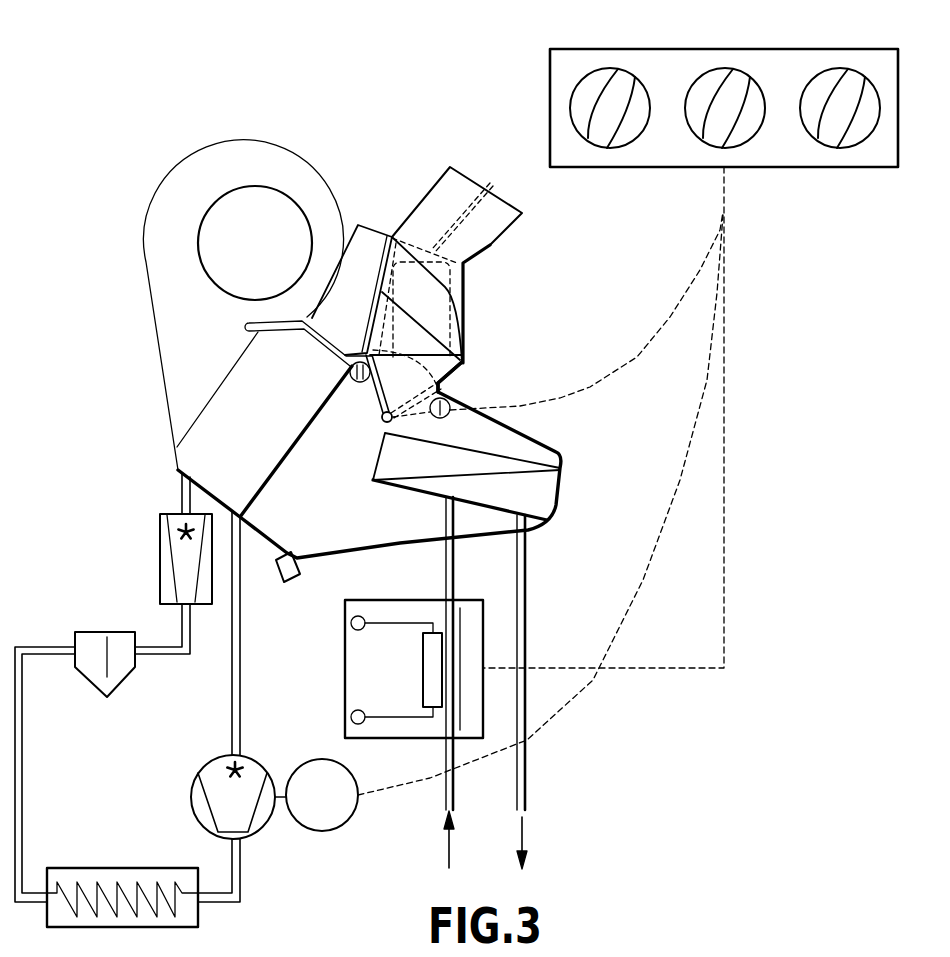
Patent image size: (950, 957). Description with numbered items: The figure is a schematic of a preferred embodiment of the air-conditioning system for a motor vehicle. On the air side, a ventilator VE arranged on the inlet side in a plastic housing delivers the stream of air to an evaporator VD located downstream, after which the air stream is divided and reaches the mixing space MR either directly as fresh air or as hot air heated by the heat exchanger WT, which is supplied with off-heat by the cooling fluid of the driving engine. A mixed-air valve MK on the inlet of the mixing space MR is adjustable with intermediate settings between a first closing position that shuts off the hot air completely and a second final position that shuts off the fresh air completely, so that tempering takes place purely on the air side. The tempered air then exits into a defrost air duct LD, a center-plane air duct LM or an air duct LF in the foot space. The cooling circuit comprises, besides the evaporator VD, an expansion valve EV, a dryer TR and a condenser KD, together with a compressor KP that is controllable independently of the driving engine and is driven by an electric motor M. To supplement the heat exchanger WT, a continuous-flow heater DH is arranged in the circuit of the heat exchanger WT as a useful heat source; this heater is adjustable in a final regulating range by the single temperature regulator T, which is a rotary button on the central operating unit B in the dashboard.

The central operating unit B is at (830, 48).
The temperature regulator T is at (735, 78).
The ventilator VE is at (154, 266).
The evaporator VD is at (203, 420).
The defrost air duct LD is at (367, 228).
The center-plane air duct LM is at (455, 173).
The foot space air duct LF is at (443, 326).
The mixing space MR is at (442, 381).
The mixed-air valve MK is at (373, 392).
The heat exchanger WT is at (544, 502).
The continuous-flow heater DH is at (352, 682).
The expansion valve EV is at (165, 553).
The dryer TR is at (125, 630).
The compressor KP is at (197, 783).
The electric motor M is at (335, 830).
The condenser KD is at (112, 867).